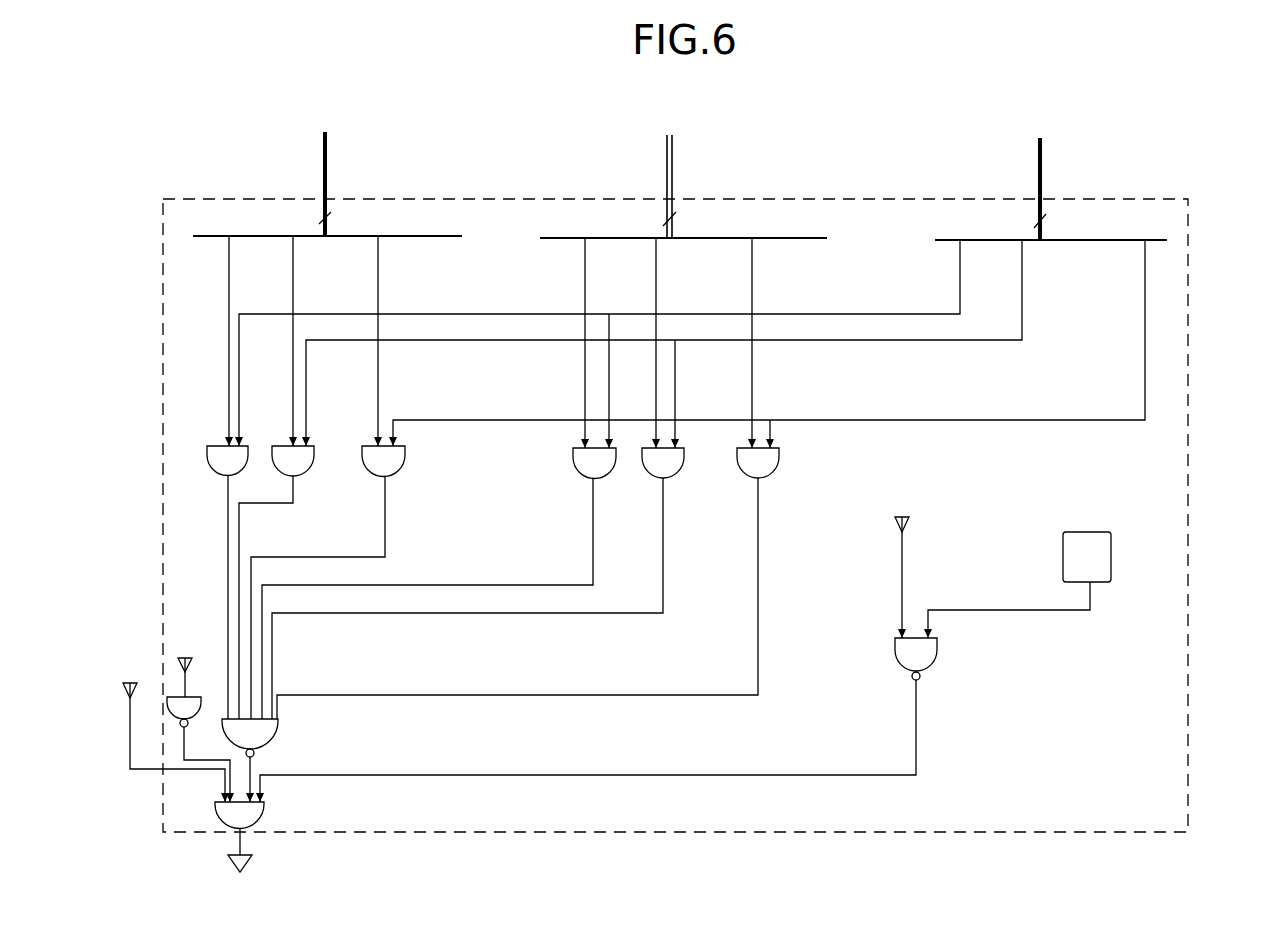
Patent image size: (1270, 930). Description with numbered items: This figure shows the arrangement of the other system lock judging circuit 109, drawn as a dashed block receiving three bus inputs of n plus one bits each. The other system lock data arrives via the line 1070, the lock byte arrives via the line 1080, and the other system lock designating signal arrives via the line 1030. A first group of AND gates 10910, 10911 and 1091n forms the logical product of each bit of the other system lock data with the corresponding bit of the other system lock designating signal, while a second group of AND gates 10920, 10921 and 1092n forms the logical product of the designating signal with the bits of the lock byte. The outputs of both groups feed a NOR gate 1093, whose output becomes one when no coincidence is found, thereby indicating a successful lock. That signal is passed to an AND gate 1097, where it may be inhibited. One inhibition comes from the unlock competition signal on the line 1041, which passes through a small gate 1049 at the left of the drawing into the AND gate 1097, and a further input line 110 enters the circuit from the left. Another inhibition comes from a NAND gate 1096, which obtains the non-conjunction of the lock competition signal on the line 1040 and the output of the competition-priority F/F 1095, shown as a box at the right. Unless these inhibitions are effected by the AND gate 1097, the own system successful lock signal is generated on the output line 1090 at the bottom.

The other system lock judging circuit 109 is at (1188, 232).
The line 1070 is at (327, 150).
The low-order bit signal lines LBo~LBn 1080 is at (673, 150).
The line 1030 is at (1042, 156).
The AND gate 10910 is at (207, 455).
The AND gate 10911 is at (365, 494).
The AND gate 1091n is at (405, 458).
The AND gate 10920 is at (573, 462).
The AND gate 10921 is at (684, 462).
The AND gate 1092n is at (779, 462).
The NOR gate 1093 is at (267, 752).
The line 1041 is at (185, 682).
The NAND gate 1049 is at (201, 700).
The input signal line 110 is at (130, 726).
The line 1040 is at (903, 578).
The competition-priority F/F 1095 is at (1063, 557).
The NAND gate 1096 is at (937, 660).
The AND gate 1097 is at (258, 820).
The line 1090 is at (237, 843).